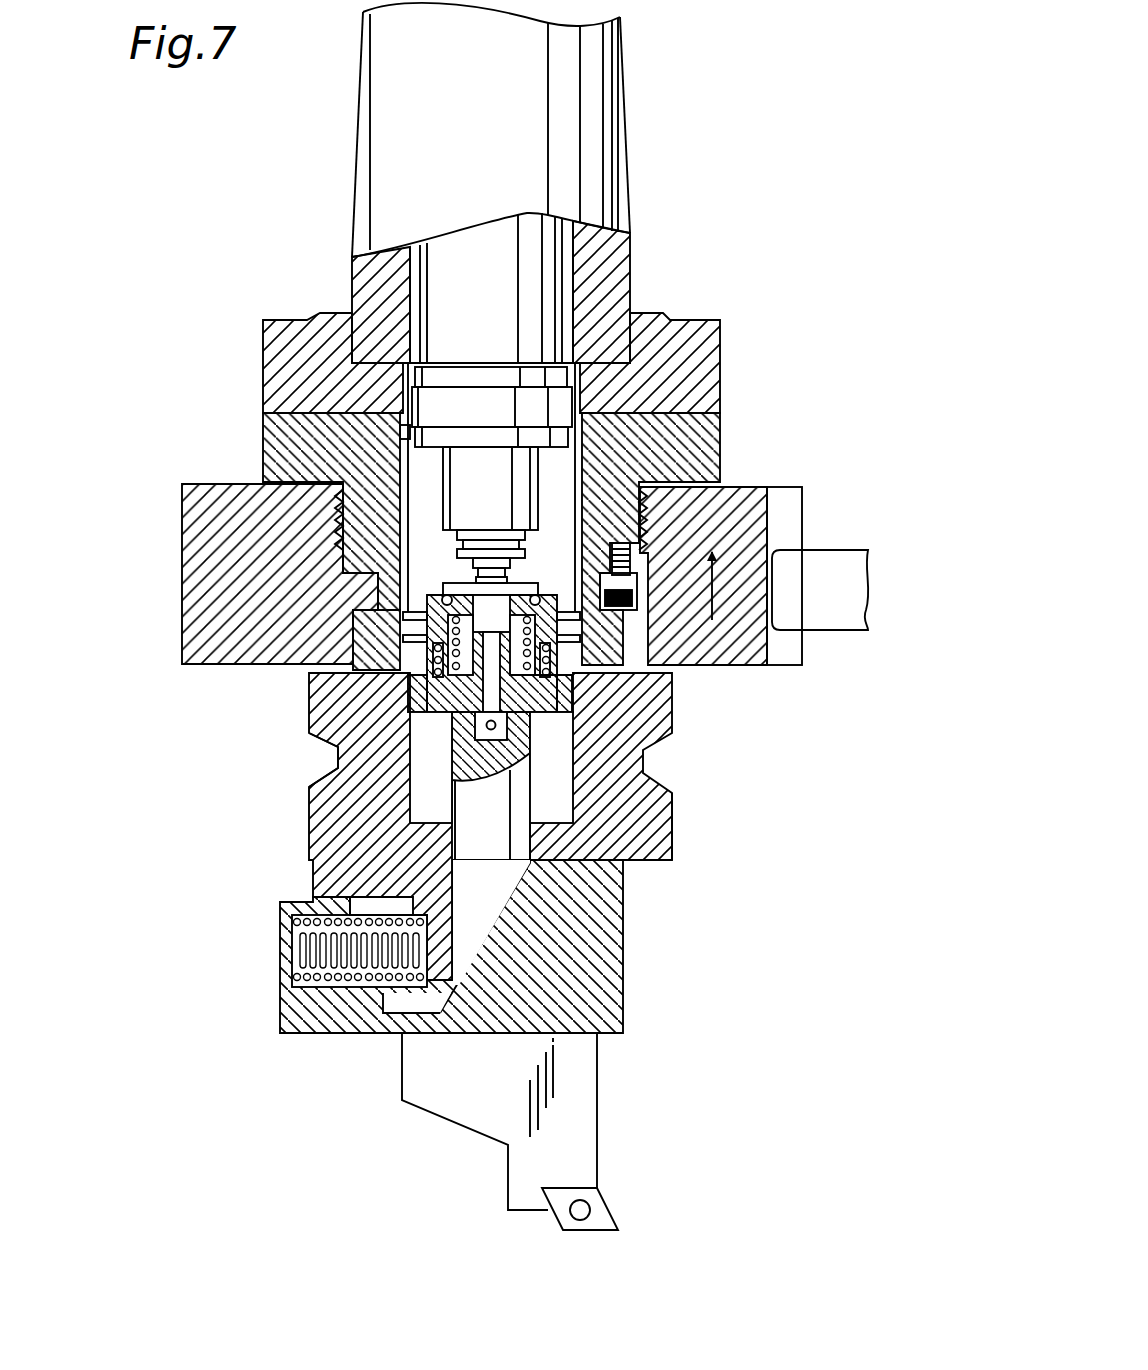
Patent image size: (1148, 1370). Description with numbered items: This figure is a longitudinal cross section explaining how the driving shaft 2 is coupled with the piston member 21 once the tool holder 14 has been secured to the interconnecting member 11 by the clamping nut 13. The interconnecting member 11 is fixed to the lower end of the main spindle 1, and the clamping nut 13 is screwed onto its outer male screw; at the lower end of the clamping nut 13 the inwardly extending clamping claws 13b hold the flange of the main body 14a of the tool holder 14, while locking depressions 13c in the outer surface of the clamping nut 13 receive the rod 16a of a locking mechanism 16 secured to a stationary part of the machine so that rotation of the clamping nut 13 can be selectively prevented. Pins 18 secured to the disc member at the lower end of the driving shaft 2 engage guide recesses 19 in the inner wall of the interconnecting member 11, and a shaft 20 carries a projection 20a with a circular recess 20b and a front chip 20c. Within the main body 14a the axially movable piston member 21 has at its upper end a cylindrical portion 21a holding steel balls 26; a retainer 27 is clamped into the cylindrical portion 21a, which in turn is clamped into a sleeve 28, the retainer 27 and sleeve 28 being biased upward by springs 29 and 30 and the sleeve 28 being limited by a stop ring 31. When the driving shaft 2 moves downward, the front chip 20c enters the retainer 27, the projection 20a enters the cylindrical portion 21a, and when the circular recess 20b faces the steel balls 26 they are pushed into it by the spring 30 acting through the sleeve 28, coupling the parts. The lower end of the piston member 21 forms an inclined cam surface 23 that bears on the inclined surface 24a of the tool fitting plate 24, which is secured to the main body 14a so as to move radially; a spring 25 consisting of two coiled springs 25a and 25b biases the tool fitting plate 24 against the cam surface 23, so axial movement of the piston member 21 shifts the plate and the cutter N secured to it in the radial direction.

The main spindle 1 is at (624, 77).
The driving shaft 2 is at (569, 271).
The interconnecting member 11 is at (725, 448).
The clamping nut 13 is at (770, 483).
The clamping claws 13b is at (200, 637).
The locking depressions 13c is at (783, 660).
The tool holder 14 is at (681, 856).
The main body 14a is at (660, 810).
The locking mechanism 16 is at (855, 640).
The rod 16a is at (842, 577).
The pins 18 is at (396, 404).
The guide recesses 19 is at (404, 433).
The shaft 20 is at (488, 475).
The projection 20a is at (460, 528).
The circular recess 20b is at (525, 542).
The front chip 20c is at (478, 581).
The piston member 21 is at (479, 853).
The cylindrical portion 21a is at (405, 614).
The inclined cam surface 23 is at (470, 950).
The tool fitting plate 24 is at (602, 973).
The inclined surface 24a is at (482, 918).
The spring 25 is at (301, 1004).
The coiled spring 25a is at (317, 980).
The coiled spring 25b is at (333, 980).
The steel balls 26 is at (427, 645).
The retainer 27 is at (520, 687).
The sleeve 28 is at (553, 663).
The spring 29 is at (338, 747).
The spring 30 is at (437, 662).
The stop ring 31 is at (580, 640).
The cutter N is at (600, 1213).